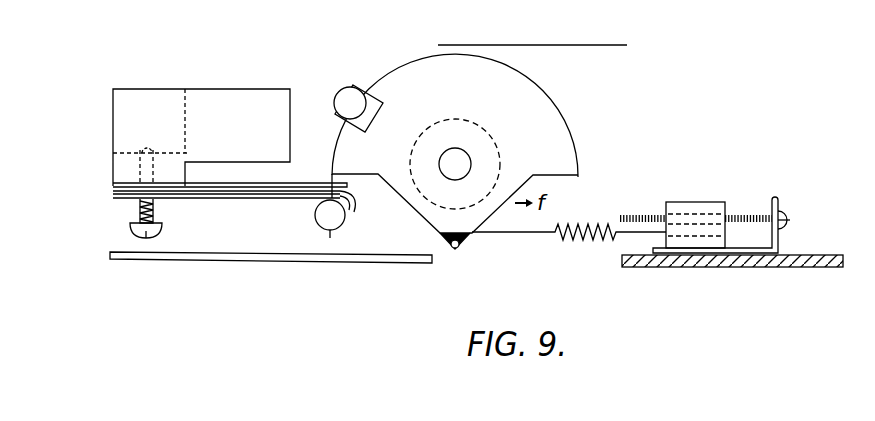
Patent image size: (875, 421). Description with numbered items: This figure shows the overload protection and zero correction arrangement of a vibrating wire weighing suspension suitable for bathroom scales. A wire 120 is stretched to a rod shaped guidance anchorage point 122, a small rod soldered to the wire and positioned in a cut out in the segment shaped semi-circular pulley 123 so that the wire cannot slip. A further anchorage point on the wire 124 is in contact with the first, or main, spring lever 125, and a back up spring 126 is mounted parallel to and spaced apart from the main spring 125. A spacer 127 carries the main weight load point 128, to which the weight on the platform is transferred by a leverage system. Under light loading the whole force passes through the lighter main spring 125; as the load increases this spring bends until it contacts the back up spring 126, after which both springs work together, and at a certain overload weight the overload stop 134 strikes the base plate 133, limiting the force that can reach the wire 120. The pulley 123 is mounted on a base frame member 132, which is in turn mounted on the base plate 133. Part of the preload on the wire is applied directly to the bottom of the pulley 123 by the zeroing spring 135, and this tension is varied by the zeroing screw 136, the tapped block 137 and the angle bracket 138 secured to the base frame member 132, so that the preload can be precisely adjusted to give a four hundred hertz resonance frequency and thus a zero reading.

The wire 120 is at (593, 45).
The rod shaped guidance anchorage point 122 is at (337, 92).
The segment shaped semi-circular pulley 123 is at (452, 78).
The anchorage point on the wire 124 is at (318, 218).
The main spring lever 125 is at (113, 198).
The back up spring 126 is at (113, 191).
The spacer 127 is at (113, 183).
The main weight load point 128 is at (118, 92).
The base frame member 132 is at (665, 262).
The base plate 133 is at (178, 258).
The overload stop 134 is at (153, 212).
The zeroing spring 135 is at (557, 238).
The zeroing screw 136 is at (794, 222).
The tapped block 137 is at (703, 202).
The angle bracket 138 is at (779, 197).